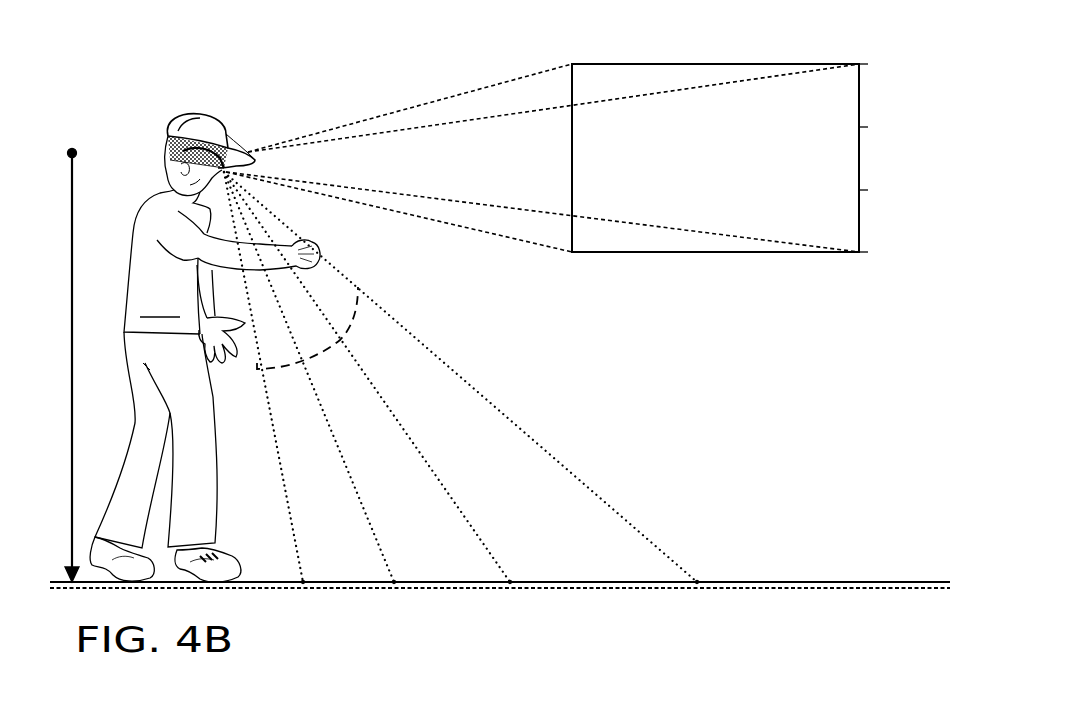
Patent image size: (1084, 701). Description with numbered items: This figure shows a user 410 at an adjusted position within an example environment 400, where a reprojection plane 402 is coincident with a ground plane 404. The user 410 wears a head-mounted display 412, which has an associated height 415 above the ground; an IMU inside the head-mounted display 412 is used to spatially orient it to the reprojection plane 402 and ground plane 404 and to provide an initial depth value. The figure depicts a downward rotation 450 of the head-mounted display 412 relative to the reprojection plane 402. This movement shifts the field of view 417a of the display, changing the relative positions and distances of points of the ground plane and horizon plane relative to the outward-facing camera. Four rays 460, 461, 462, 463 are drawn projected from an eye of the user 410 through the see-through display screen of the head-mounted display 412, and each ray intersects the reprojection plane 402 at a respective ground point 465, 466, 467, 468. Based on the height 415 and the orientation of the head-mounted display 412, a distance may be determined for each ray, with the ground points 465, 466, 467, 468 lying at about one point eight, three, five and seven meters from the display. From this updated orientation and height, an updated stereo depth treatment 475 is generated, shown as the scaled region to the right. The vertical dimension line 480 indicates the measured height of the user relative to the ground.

The environment 400 is at (160, 37).
The reprojection plane 402 is at (813, 588).
The ground plane 404 is at (813, 582).
The user 410 is at (207, 310).
The head-mounted display 412 is at (242, 156).
The height 415 is at (76, 152).
The field of view 417a is at (353, 305).
The downward rotation 450 is at (255, 125).
The ray 460 is at (287, 503).
The ray 461 is at (356, 490).
The ray 462 is at (432, 467).
The ray 463 is at (513, 413).
The ground point 465 is at (305, 583).
The ground point 466 is at (396, 583).
The ground point 467 is at (512, 583).
The ground point 468 is at (699, 583).
The updated stereo depth treatment 475 is at (636, 204).
The user height measurement 480 is at (72, 374).